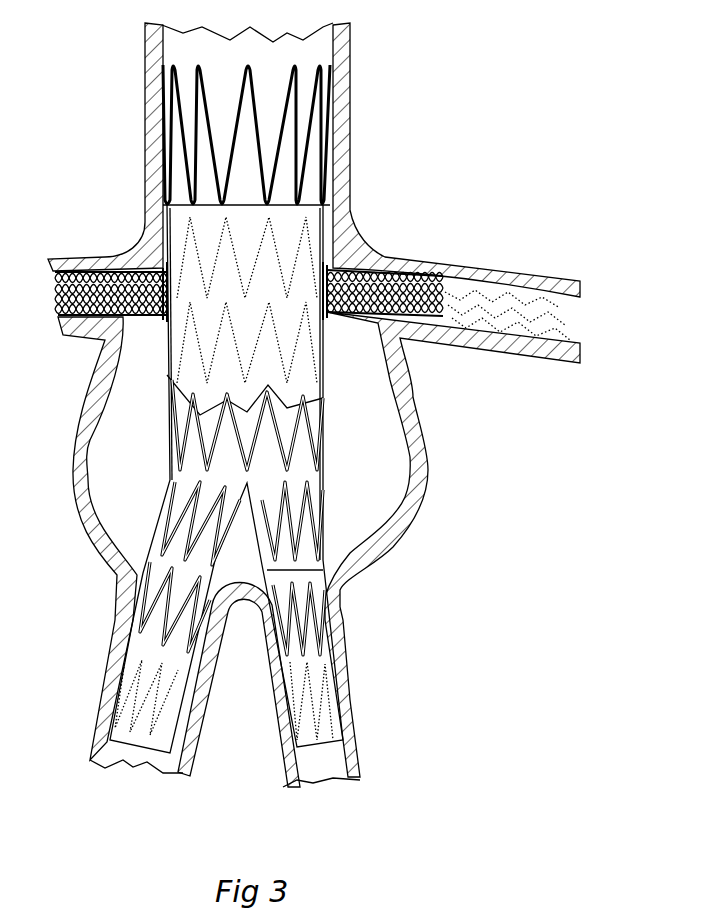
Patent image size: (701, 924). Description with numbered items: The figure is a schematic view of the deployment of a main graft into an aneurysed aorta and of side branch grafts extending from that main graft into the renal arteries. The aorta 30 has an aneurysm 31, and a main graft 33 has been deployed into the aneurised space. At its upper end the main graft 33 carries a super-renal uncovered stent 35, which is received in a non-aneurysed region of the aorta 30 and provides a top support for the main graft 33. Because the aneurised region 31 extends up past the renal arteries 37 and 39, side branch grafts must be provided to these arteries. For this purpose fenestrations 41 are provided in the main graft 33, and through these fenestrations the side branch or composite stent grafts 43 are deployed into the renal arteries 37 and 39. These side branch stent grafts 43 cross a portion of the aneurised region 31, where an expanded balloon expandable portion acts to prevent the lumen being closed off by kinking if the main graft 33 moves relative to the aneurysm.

The aorta 30 is at (343, 87).
The aneurysm 31 is at (388, 473).
The main graft 33 is at (215, 357).
The super-renal uncovered stent 35 is at (310, 155).
The renal artery 37 is at (493, 267).
The renal artery 39 is at (77, 260).
The fenestrations 41 is at (160, 262).
The side branch stent grafts 43 is at (100, 277).